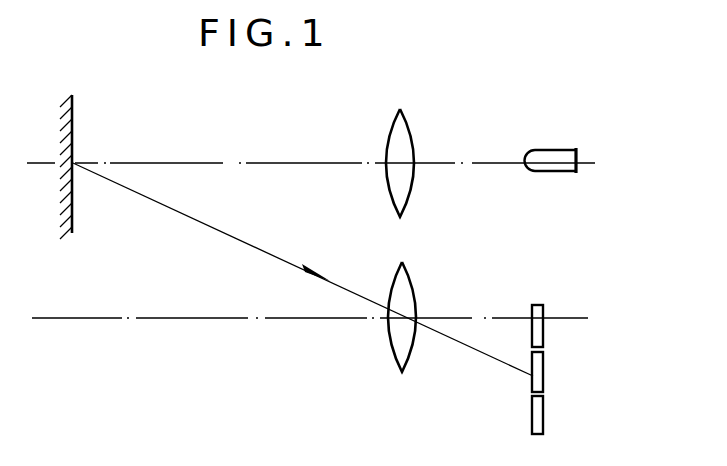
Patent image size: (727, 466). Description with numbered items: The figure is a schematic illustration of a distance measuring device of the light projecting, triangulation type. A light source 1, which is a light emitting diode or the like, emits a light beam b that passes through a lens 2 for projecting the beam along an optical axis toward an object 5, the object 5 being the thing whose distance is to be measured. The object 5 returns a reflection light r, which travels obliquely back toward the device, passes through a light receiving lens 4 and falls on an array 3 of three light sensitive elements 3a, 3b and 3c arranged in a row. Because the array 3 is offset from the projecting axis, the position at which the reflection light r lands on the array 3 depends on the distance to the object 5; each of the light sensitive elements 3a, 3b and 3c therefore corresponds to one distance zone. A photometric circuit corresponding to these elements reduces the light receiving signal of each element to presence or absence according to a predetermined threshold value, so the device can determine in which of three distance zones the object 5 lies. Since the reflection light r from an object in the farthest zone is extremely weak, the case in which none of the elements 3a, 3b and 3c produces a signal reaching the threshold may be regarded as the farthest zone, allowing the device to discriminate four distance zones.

The light source 1 is at (539, 150).
The lens 2 is at (414, 138).
The array of light sensitive elements 3 is at (539, 370).
The light sensitive element 3a is at (543, 335).
The light sensitive element 3b is at (543, 380).
The light sensitive element 3c is at (543, 420).
The light receiving lens 4 is at (415, 294).
The object 5 is at (73, 115).
The light beam b is at (222, 162).
The reflection light r is at (237, 243).